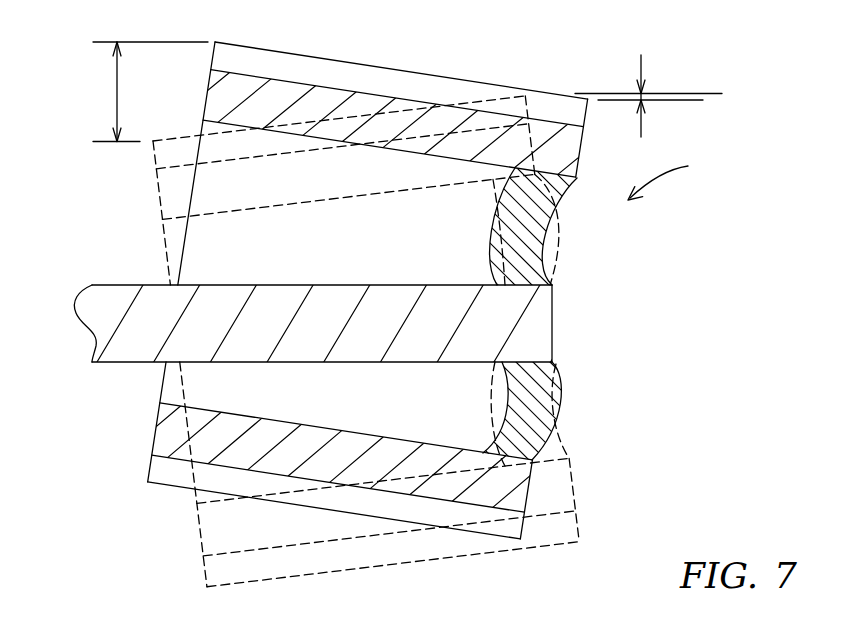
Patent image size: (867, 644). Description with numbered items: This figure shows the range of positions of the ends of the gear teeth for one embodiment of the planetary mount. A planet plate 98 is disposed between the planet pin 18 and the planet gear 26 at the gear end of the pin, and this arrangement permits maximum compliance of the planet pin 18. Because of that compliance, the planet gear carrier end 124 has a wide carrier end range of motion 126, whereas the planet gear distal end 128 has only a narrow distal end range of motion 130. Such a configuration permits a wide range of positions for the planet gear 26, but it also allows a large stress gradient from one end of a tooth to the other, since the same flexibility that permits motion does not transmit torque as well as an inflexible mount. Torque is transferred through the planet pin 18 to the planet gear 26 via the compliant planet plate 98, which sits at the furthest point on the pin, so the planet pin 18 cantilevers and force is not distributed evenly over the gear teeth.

The planet pin 18 is at (553, 307).
The planet gear 26 is at (333, 97).
The planet plate 98 is at (545, 238).
The planet gear carrier end 124 is at (158, 200).
The carrier end range of motion 126 is at (117, 91).
The planet gear distal end 128 is at (680, 177).
The distal end range of motion 130 is at (641, 63).